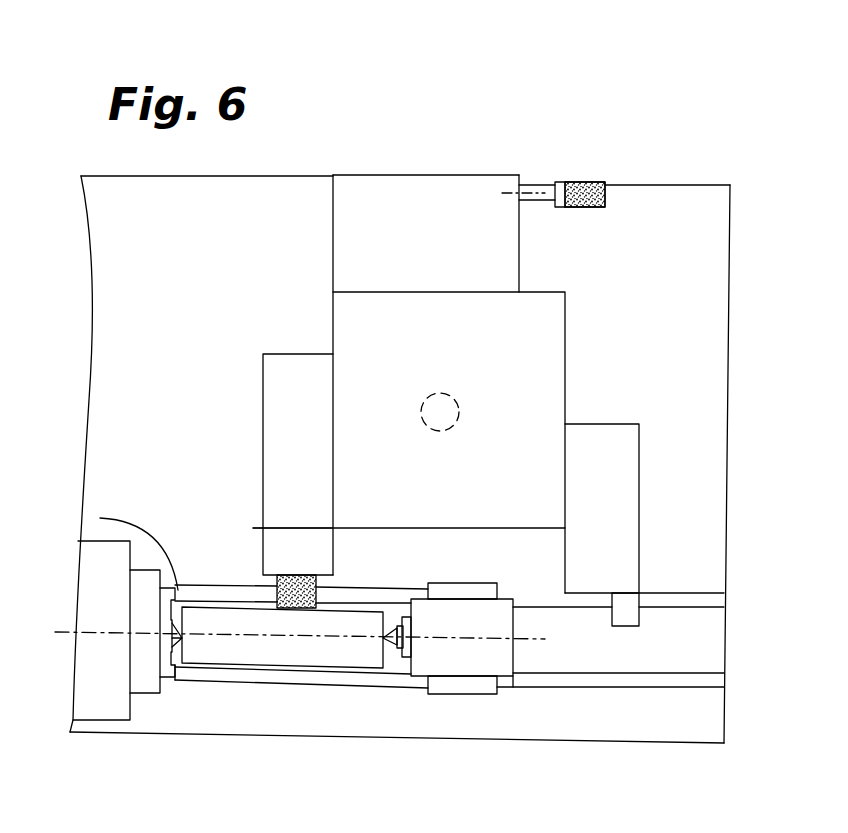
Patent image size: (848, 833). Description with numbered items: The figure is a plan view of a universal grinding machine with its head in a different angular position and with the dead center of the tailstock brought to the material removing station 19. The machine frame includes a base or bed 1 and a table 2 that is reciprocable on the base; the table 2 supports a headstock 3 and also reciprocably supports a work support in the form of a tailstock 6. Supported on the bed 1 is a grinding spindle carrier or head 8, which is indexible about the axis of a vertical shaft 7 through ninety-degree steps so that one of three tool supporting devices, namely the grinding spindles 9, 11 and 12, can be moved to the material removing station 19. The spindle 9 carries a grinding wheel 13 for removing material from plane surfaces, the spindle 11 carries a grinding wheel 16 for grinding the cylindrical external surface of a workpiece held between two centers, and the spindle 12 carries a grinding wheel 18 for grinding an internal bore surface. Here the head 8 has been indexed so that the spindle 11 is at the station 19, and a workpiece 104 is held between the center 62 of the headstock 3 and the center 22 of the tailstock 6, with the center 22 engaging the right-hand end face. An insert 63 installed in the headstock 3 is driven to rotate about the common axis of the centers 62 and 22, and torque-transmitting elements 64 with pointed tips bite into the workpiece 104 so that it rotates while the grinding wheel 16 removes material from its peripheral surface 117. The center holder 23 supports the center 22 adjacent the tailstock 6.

The base or bed 1 is at (708, 207).
The table 2 is at (716, 653).
The headstock 3 is at (95, 567).
The tailstock 6 is at (507, 688).
The vertical shaft 7 is at (458, 410).
The grinding spindle carrier or head 8 is at (565, 328).
The grinding spindle 9 is at (553, 546).
The grinding spindle 11 is at (271, 527).
The grinding spindle 12 is at (519, 190).
The grinding wheel 13 is at (630, 619).
The grinding wheel 16 is at (287, 608).
The grinding wheel 18 is at (595, 183).
The material removing station 19 is at (237, 573).
The center 22 is at (390, 646).
The center holder 23 is at (403, 657).
The center 62 is at (185, 700).
The insert 63 is at (141, 705).
The torque-transmitting elements 64 is at (100, 518).
The workpiece 104 is at (318, 665).
The peripheral surface 117 is at (232, 667).